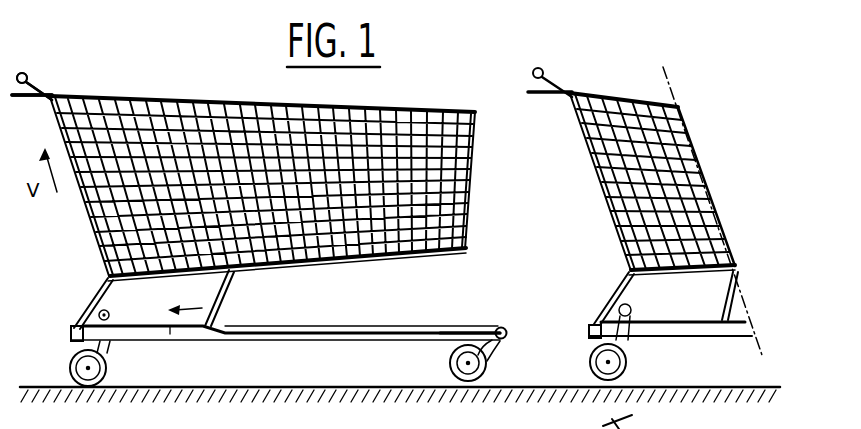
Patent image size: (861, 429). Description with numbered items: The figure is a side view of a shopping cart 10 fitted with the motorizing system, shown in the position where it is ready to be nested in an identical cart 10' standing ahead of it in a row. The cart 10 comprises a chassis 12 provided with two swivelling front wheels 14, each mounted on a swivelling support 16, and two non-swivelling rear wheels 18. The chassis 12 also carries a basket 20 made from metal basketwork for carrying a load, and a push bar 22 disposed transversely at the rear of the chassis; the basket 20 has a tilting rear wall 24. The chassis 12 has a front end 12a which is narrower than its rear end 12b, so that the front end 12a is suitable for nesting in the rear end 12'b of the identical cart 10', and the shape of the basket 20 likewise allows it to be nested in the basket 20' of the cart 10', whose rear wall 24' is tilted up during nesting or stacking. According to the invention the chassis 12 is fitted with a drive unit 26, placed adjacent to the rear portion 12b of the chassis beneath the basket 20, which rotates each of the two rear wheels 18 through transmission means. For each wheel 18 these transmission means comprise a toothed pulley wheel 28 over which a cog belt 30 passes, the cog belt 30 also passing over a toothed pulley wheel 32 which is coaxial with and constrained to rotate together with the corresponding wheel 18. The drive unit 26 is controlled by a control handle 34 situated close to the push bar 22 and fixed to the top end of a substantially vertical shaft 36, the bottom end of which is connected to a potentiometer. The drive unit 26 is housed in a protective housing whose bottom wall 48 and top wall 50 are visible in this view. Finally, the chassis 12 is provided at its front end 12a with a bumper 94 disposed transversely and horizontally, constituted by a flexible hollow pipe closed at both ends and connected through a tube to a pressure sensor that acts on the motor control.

The shopping cart 10 is at (243, 163).
The identical cart 10' is at (645, 204).
The chassis 12 is at (286, 318).
The front end 12a is at (496, 330).
The rear end 12b is at (70, 332).
The rear end of identical cart 12'b is at (577, 306).
The swivelling front wheel 14 is at (450, 366).
The swivelling support 16 is at (488, 357).
The non-swivelling rear wheel 18 is at (70, 366).
The basket 20 is at (265, 164).
The basket of identical cart 20' is at (662, 182).
The push bar 22 is at (27, 72).
The tilting rear wall 24 is at (65, 263).
The rear wall of identical cart basket 24' is at (593, 260).
The drive unit 26 is at (218, 307).
The toothed pulley wheel 28 is at (109, 311).
The cog belt 30 is at (105, 343).
The toothed pulley wheel 32 is at (92, 380).
The control handle 34 is at (30, 100).
The substantially vertical shaft 36 is at (90, 233).
The bottom wall 48 is at (172, 340).
The top wall 50 is at (198, 277).
The bumper 94 is at (504, 327).